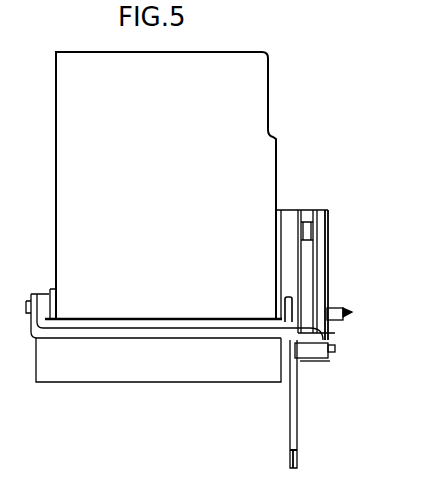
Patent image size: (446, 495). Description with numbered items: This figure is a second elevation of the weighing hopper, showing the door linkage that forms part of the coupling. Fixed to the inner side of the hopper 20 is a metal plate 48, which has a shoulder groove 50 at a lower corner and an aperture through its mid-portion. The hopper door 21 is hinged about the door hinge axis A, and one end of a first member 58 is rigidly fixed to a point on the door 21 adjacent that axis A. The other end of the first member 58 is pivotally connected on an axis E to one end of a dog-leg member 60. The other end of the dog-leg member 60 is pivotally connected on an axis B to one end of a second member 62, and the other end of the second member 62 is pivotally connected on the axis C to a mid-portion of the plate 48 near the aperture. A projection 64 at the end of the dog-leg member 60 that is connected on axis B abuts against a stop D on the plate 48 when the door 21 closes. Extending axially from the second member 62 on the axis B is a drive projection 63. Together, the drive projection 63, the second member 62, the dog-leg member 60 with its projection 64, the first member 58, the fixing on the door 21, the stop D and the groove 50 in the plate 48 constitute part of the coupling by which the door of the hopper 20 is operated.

The hopper 20 is at (241, 130).
The hopper door 21 is at (139, 383).
The metal plate 48 is at (297, 418).
The shoulder groove 50 is at (298, 460).
The first member 58 is at (318, 268).
The dog-leg member 60 is at (315, 254).
The second member 62 is at (340, 347).
The drive projection 63 is at (347, 323).
The projection 64 is at (285, 345).
The door hinge axis A is at (293, 305).
The axis B is at (352, 311).
The axis C is at (333, 355).
The stop D is at (325, 333).
The axis E is at (305, 240).